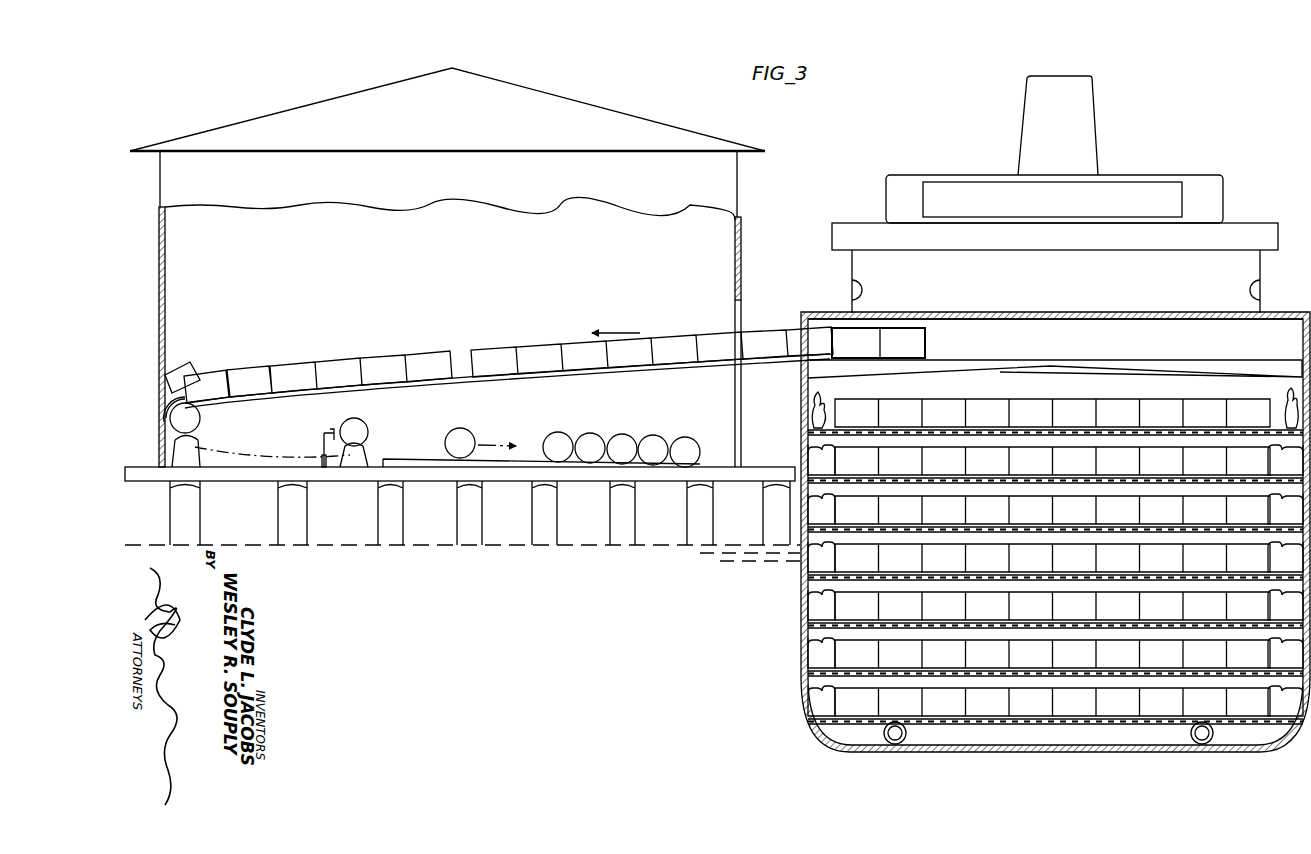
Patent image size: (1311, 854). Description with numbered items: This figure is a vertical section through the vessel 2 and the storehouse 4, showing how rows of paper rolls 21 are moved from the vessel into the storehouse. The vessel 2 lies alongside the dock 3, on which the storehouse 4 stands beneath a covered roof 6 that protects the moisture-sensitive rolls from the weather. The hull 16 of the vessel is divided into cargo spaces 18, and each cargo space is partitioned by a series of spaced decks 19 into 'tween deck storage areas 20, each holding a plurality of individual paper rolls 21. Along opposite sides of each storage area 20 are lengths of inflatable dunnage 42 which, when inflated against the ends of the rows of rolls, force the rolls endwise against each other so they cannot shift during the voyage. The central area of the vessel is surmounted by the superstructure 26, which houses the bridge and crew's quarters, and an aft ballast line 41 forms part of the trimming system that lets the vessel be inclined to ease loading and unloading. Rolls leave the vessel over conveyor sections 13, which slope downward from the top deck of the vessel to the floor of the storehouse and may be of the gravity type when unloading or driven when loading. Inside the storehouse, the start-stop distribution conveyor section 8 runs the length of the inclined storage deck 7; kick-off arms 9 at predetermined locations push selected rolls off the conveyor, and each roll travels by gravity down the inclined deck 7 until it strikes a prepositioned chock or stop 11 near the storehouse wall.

The vessel 2 is at (1025, 429).
The dock 3 is at (337, 478).
The storehouse 4 is at (461, 267).
The covered roof 6 is at (564, 99).
The storage deck 7 is at (391, 456).
The distribution conveyor section 8 is at (368, 448).
The kick-off arms 9 is at (322, 433).
The chock or stop 11 is at (700, 464).
The conveyor sections 13 is at (468, 383).
The hull 16 is at (797, 713).
The cargo spaces 18 is at (1277, 396).
The decks 19 is at (1052, 557).
The 'tween deck storage areas 20 is at (1185, 535).
The paper rolls 21 is at (1031, 432).
The superstructure 26 is at (1208, 190).
The aft ballast line 41 is at (904, 743).
The dunnage 42 is at (820, 408).